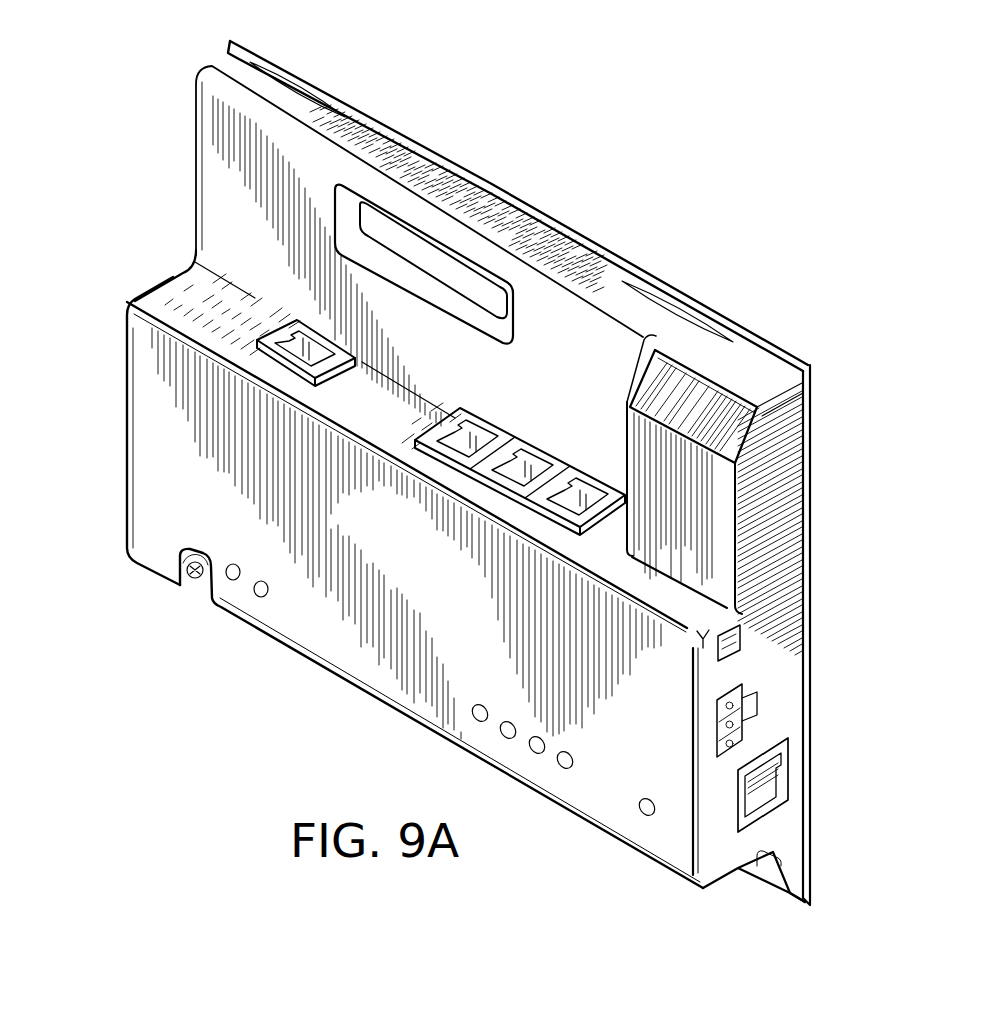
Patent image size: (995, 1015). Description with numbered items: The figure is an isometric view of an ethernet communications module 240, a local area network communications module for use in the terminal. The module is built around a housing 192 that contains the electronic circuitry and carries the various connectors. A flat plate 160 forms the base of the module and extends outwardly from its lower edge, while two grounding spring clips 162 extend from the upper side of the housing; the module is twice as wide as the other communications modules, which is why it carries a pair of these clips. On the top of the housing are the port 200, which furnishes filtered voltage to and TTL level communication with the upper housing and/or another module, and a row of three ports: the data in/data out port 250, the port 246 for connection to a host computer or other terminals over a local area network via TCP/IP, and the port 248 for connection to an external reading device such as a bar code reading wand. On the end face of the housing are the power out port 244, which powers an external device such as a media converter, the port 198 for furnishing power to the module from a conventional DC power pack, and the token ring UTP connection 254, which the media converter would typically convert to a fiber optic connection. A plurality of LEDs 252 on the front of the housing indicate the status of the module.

The flat plate 160 is at (795, 893).
The grounding spring clip 162 is at (288, 78).
The housing 192 is at (222, 200).
The port 198 is at (756, 706).
The port 200 is at (310, 340).
The ethernet communications module 240 is at (145, 693).
The power out port 244 is at (743, 638).
The port 246 is at (538, 467).
The port 248 is at (594, 497).
The data in/data out port 250 is at (481, 433).
The LEDs 252 is at (260, 596).
The token ring UTP connection 254 is at (772, 778).